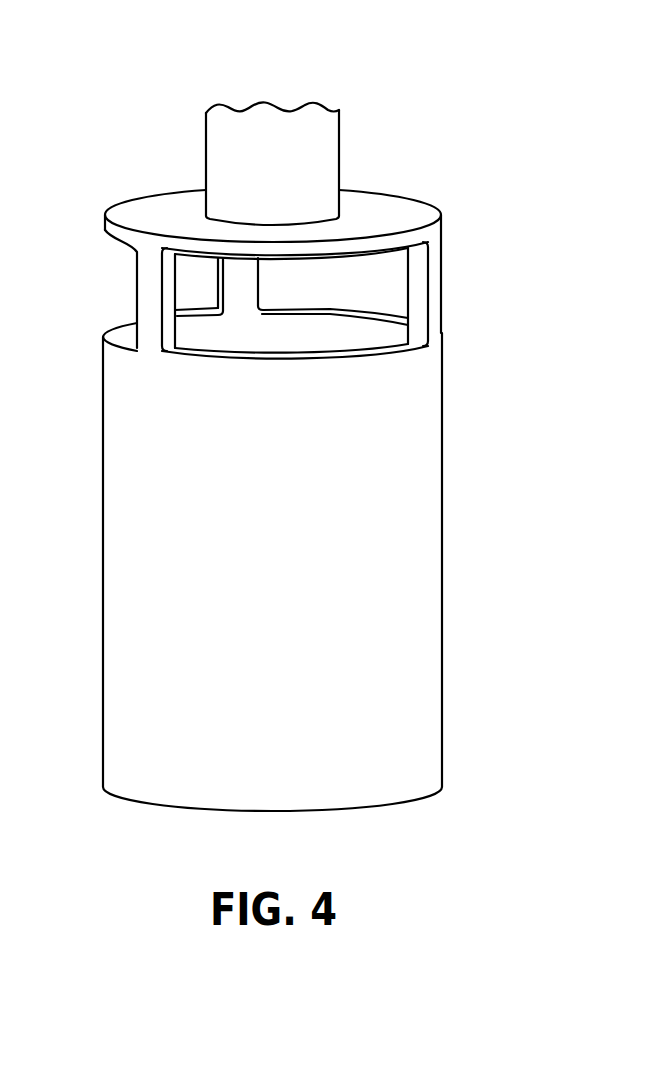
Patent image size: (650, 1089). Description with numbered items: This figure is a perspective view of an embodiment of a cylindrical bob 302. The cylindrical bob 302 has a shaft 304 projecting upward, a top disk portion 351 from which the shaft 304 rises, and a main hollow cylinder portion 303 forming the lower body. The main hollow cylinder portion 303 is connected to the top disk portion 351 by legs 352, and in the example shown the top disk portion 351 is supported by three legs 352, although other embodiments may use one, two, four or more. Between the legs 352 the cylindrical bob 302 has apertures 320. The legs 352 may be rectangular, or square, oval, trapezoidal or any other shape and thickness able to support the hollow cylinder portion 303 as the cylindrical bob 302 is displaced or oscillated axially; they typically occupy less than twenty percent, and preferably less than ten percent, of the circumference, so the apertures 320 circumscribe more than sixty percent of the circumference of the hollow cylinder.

The cylindrical bob 302 is at (430, 84).
The main hollow cylinder portion 303 is at (418, 563).
The shaft 304 is at (228, 155).
The top disk portion 351 is at (379, 210).
The legs 352 is at (145, 295).
The apertures 320 is at (392, 290).